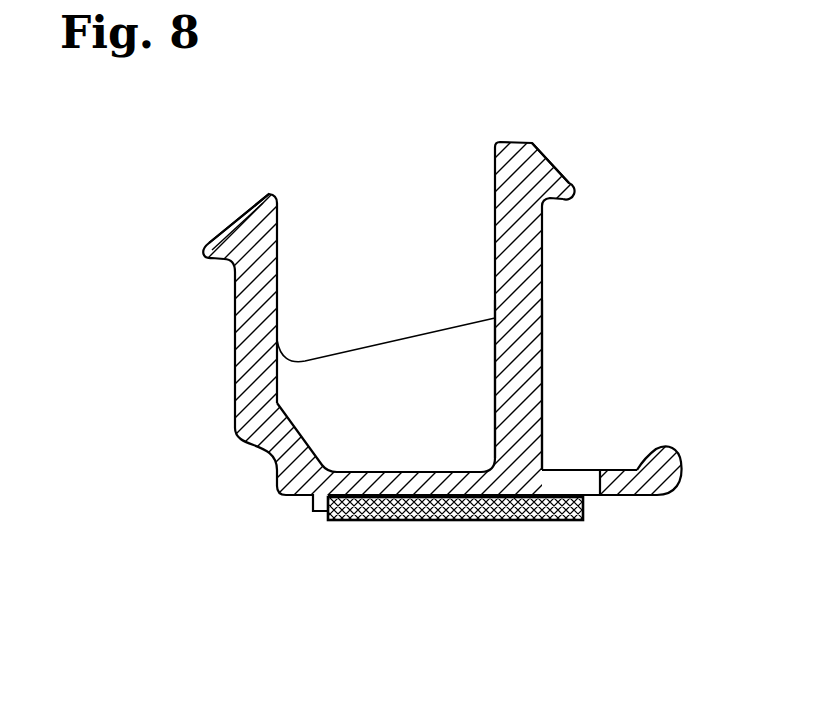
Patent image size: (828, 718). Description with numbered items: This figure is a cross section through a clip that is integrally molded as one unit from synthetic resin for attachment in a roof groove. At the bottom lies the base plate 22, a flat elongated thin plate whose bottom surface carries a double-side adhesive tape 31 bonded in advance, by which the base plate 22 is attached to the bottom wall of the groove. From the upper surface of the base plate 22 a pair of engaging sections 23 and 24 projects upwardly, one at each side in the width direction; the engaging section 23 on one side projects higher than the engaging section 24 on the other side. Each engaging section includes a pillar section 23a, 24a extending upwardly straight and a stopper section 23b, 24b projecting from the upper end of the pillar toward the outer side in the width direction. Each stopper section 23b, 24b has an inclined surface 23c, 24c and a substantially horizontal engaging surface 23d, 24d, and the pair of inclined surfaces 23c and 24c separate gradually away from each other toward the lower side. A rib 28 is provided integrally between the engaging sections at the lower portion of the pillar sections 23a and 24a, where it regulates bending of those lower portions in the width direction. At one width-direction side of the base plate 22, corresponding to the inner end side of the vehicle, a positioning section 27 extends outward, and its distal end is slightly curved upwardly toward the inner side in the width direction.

The base plate 22 is at (293, 473).
The engaging section 23 is at (501, 131).
The pillar section 23a is at (533, 354).
The stopper section 23b is at (513, 170).
The inclined surface 23c is at (558, 167).
The engaging surface 23d is at (555, 202).
The engaging section 24 is at (283, 193).
The pillar section 24a is at (247, 370).
The stopper section 24b is at (217, 240).
The inclined surface 24c is at (247, 211).
The engaging surface 24d is at (221, 260).
The positioning section 27 is at (669, 452).
The rib 28 is at (397, 366).
The double-side adhesive tape 31 is at (472, 519).